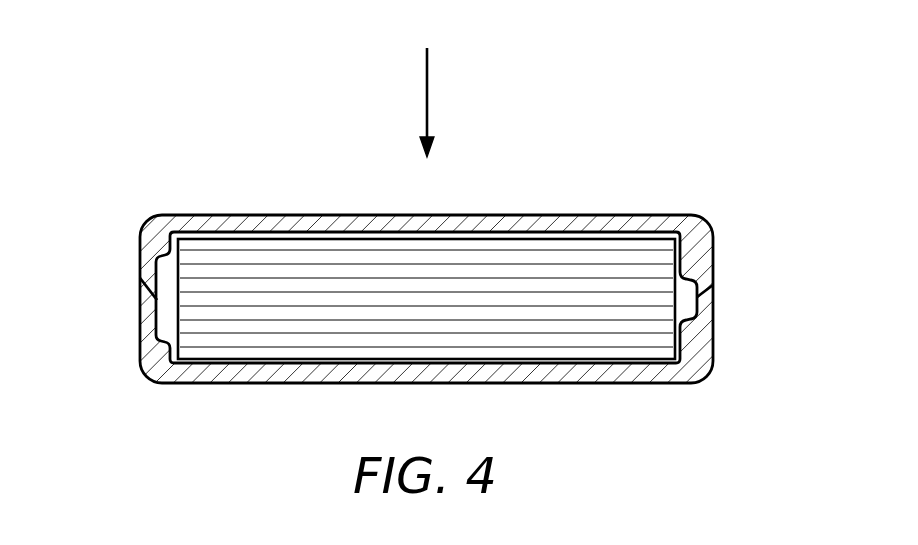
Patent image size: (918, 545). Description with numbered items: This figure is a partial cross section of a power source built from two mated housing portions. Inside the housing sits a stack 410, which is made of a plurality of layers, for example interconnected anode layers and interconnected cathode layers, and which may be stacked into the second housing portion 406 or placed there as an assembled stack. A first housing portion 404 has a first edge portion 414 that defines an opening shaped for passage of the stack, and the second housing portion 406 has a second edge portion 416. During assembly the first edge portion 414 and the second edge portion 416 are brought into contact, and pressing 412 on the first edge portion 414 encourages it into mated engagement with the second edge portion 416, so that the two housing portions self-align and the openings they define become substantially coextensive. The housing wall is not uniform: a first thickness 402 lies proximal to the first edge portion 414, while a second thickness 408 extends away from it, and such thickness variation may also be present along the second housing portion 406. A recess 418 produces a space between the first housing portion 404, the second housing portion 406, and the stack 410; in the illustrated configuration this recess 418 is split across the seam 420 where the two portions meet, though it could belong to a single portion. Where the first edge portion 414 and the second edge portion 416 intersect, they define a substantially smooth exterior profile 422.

The first thickness 402 is at (157, 262).
The first housing portion 404 is at (563, 213).
The second housing portion 406 is at (703, 332).
The second thickness 408 is at (703, 253).
The stack 410 is at (625, 258).
The pressing 412 is at (427, 102).
The first edge portion 414 is at (140, 278).
The second edge portion 416 is at (140, 308).
The recess 418 is at (165, 260).
The seam 420 is at (156, 300).
The exterior profile 422 is at (710, 290).